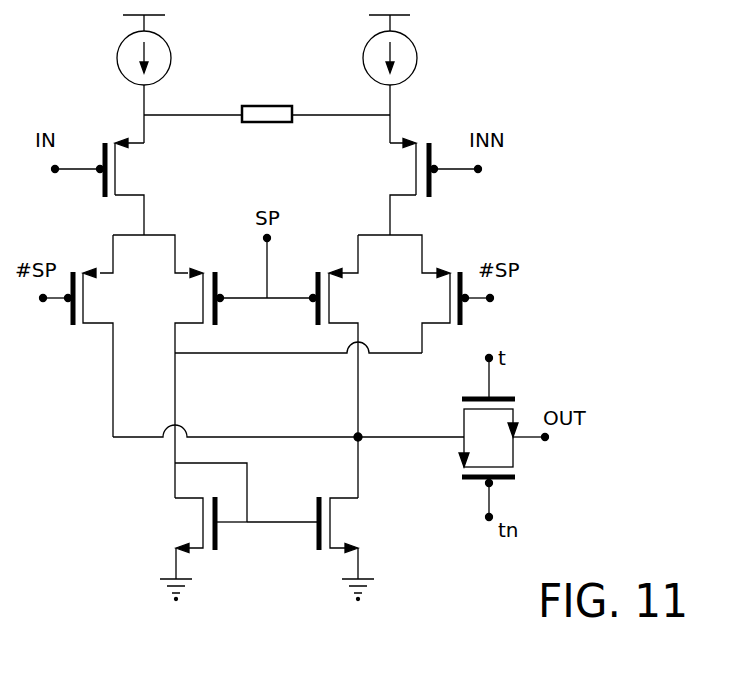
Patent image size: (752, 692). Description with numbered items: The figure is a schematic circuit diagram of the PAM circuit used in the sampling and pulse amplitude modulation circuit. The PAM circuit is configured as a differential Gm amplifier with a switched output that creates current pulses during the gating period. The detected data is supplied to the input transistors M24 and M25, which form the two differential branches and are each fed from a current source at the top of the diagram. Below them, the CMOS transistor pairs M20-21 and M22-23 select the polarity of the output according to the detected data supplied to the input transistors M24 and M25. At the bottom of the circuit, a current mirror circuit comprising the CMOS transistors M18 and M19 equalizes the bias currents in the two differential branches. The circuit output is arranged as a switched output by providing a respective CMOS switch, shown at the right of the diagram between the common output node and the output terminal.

The input transistor M24 is at (116, 187).
The input transistor M25 is at (418, 187).
The CMOS transistor pair M20-21 is at (128, 366).
The CMOS transistor pair M22-23 is at (406, 366).
The current mirror transistor M18 is at (187, 549).
The current mirror transistor M19 is at (322, 549).